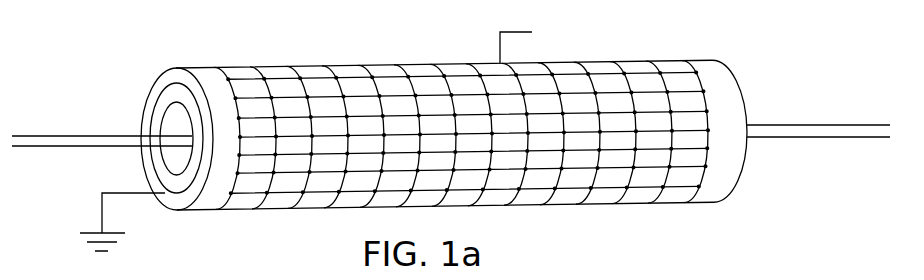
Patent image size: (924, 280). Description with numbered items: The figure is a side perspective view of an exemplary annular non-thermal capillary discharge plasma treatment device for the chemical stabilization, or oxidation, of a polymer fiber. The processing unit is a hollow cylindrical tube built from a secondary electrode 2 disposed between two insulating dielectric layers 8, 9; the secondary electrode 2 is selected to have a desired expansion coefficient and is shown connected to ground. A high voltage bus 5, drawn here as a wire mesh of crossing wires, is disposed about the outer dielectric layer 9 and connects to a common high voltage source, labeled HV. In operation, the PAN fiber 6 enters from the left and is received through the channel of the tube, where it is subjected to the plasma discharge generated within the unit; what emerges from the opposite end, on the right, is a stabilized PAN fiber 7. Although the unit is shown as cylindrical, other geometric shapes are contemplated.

The secondary electrode 2 is at (104, 219).
The high voltage bus 5 is at (382, 75).
The PAN fiber 6 is at (100, 136).
The stabilized PAN fiber 7 is at (788, 127).
The inner insulating dielectric layer 8 is at (152, 113).
The outer insulating dielectric layer 9 is at (172, 74).